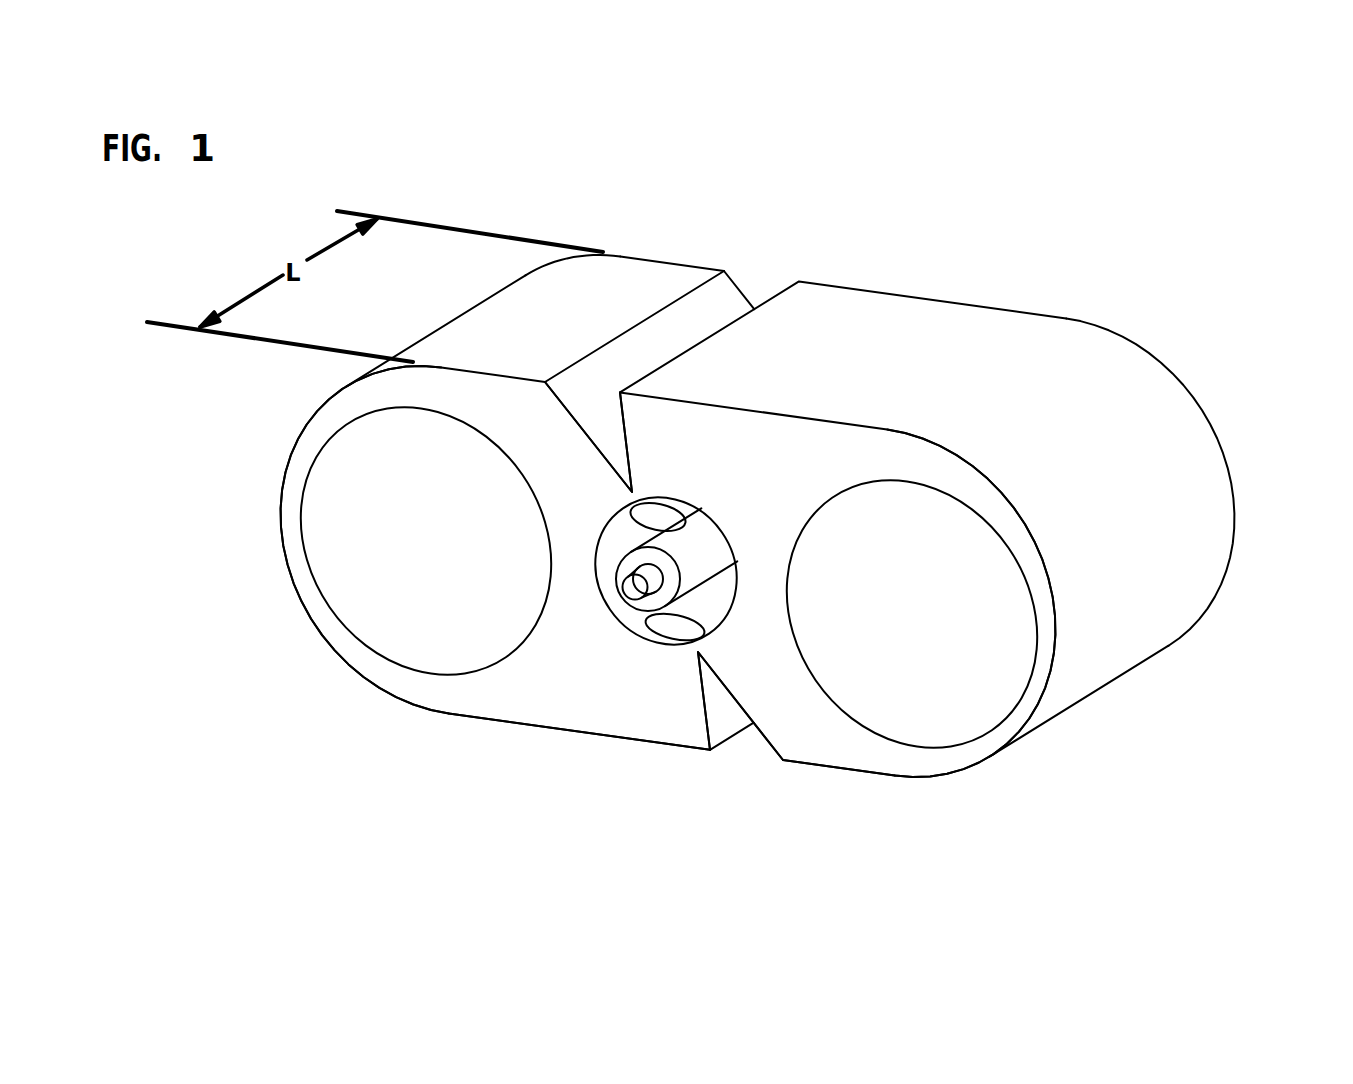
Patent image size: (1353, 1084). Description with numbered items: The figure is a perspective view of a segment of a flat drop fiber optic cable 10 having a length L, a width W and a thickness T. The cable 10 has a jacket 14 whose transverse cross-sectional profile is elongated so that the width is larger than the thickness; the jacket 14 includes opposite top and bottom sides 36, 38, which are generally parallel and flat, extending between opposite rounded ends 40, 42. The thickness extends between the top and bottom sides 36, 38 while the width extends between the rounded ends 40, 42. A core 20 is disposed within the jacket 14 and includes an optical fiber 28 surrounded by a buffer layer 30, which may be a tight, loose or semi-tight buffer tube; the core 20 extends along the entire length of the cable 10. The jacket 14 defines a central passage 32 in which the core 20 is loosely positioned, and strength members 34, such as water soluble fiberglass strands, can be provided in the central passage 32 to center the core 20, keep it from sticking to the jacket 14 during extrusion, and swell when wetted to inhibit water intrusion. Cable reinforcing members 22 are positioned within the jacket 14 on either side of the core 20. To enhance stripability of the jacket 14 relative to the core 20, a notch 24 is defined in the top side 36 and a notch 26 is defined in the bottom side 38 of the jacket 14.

The fiber optic cable 10 is at (1140, 345).
The jacket 14 is at (853, 471).
The core 20 is at (637, 608).
The cable reinforcing members 22 is at (440, 557).
The notch 24 is at (737, 305).
The notch 26 is at (737, 740).
The optical fiber 28 is at (632, 583).
The buffer layer 30 is at (702, 555).
The central passage 32 is at (597, 552).
The strength members 34 is at (653, 517).
The top side 36 is at (890, 332).
The bottom side 38 is at (652, 740).
The rounded end 40 is at (288, 467).
The rounded end 42 is at (1222, 518).